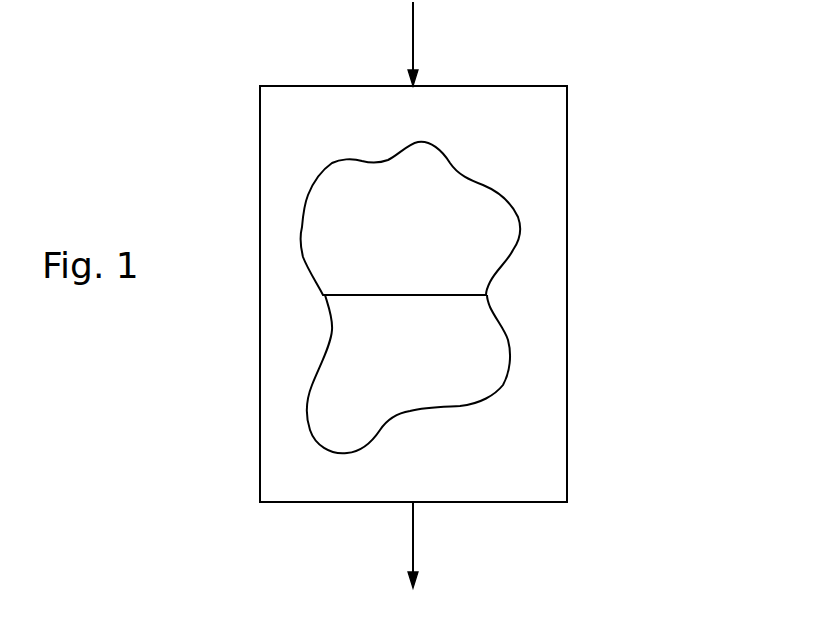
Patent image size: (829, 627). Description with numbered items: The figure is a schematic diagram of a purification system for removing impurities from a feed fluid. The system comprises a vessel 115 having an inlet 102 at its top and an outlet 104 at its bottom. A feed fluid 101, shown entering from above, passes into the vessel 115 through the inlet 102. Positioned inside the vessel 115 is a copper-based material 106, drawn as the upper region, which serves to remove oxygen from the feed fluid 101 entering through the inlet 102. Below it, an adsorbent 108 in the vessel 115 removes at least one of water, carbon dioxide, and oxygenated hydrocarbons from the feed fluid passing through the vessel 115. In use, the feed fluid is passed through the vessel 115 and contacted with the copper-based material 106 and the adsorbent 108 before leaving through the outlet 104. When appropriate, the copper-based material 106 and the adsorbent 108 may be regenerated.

The feed fluid 101 is at (413, 23).
The inlet 102 is at (417, 75).
The outlet 104 is at (416, 503).
The copper-based material 106 is at (520, 249).
The adsorbent 108 is at (512, 360).
The vessel 115 is at (568, 173).